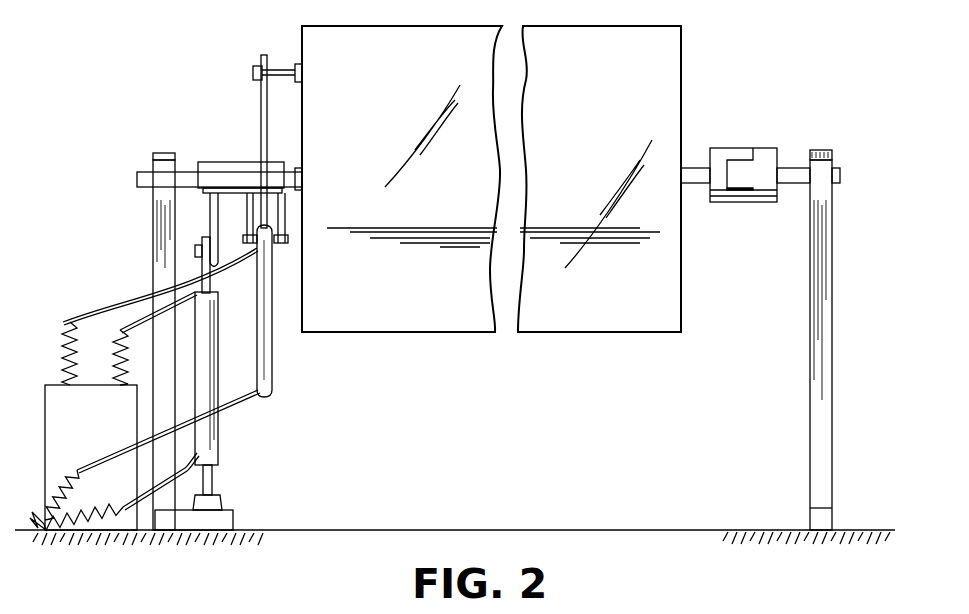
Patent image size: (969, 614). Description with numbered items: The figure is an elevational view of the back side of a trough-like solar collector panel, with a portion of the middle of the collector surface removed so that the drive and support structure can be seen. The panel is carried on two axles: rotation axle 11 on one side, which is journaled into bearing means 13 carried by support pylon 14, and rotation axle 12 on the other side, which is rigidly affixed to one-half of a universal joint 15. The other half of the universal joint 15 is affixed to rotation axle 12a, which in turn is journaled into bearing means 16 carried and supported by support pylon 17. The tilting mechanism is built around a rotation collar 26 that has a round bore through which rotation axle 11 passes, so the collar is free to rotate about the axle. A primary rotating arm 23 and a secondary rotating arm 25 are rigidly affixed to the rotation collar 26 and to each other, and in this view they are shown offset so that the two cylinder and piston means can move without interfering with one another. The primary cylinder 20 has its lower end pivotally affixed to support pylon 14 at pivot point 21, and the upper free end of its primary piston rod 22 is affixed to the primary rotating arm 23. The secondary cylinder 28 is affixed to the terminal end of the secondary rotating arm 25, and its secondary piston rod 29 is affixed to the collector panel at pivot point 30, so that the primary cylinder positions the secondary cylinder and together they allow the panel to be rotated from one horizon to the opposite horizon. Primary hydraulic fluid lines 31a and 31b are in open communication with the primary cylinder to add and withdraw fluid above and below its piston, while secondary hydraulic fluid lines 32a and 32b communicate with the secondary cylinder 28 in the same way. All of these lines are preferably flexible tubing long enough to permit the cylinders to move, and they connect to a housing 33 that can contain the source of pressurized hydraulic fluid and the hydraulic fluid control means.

The rotation axle 11 is at (182, 175).
The rotation axle 12 is at (690, 167).
The rotation axle 12a is at (790, 167).
The bearing means 13 is at (153, 165).
The support pylon 14 is at (155, 219).
The universal joint 15 is at (735, 150).
The bearing means 16 is at (832, 158).
The support pylon 17 is at (835, 225).
The primary cylinder 20 is at (220, 434).
The pivot point 21 is at (228, 490).
The primary piston rod 22 is at (197, 267).
The primary rotating arm 23 is at (213, 200).
The secondary rotating arm 25 is at (283, 210).
The rotation collar 26 is at (247, 162).
The secondary cylinder 28 is at (273, 297).
The secondary piston rod 29 is at (261, 90).
The pivot point 30 is at (257, 70).
The primary hydraulic fluid line 31a is at (133, 318).
The primary hydraulic fluid line 31b is at (147, 494).
The secondary hydraulic fluid line 32a is at (76, 290).
The secondary hydraulic fluid line 32b is at (78, 468).
The housing 33 is at (53, 385).